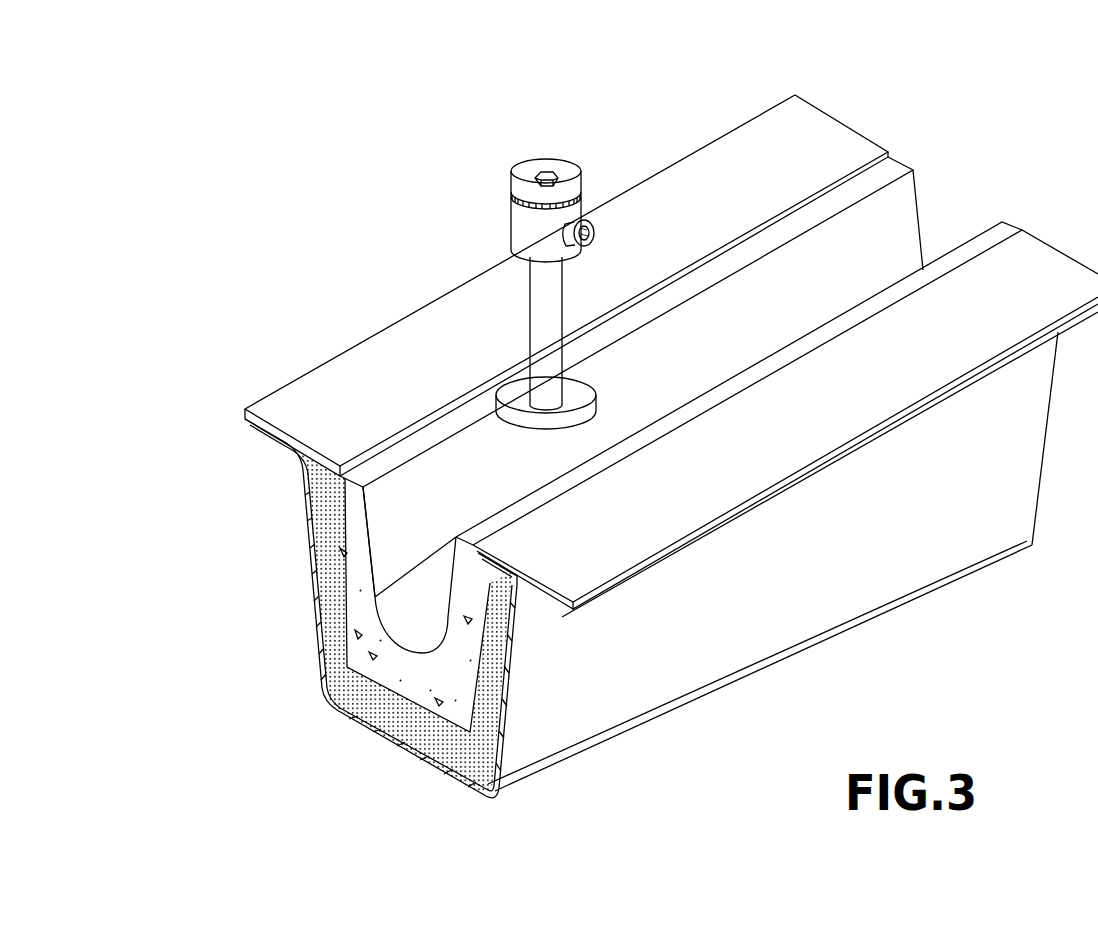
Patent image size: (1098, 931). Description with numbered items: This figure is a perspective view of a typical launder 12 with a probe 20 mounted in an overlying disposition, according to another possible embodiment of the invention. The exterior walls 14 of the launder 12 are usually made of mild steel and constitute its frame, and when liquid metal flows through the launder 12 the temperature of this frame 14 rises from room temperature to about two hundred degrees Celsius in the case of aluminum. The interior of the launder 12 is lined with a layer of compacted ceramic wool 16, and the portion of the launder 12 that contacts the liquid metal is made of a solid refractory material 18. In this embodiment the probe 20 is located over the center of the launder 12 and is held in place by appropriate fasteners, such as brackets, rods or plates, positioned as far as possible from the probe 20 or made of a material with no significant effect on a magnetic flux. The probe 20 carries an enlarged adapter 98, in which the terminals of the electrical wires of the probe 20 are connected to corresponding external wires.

The launder 12 is at (245, 338).
The exterior walls 14 is at (833, 137).
The layer of compacted ceramic wool 16 is at (330, 596).
The solid refractory material 18 is at (411, 448).
The probe 20 is at (566, 133).
The enlarged adapter 98 is at (522, 217).